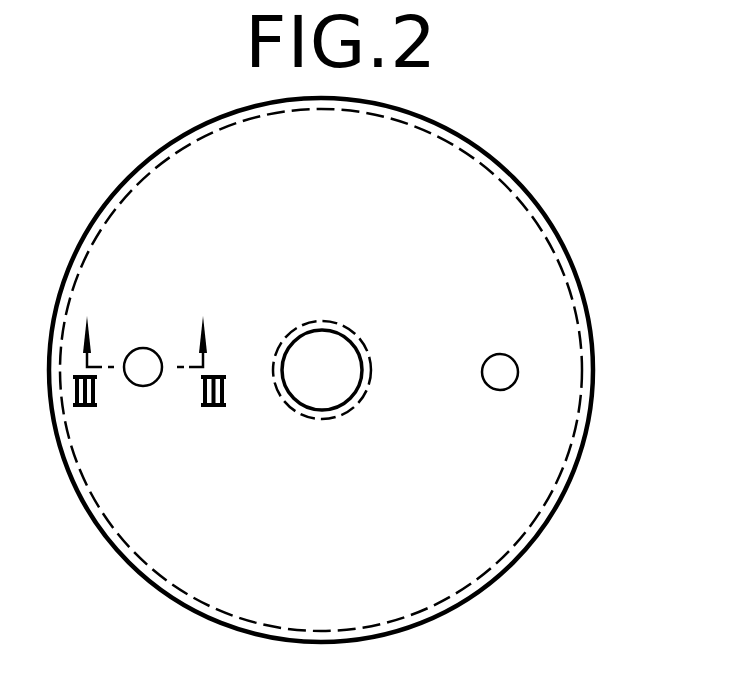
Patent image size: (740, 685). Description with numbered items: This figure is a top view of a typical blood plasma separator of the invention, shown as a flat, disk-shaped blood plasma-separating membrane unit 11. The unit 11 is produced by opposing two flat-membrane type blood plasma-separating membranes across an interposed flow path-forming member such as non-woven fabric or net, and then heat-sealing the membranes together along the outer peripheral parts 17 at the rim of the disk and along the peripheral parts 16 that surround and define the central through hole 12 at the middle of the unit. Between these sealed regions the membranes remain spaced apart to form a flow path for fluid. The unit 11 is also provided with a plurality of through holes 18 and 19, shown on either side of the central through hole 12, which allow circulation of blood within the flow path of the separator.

The blood plasma-separating membrane unit 11 is at (560, 228).
The central through hole 12 is at (324, 382).
The peripheral parts 16 is at (369, 366).
The peripheral parts 17 is at (594, 358).
The through hole 18 is at (148, 383).
The through hole 19 is at (503, 387).